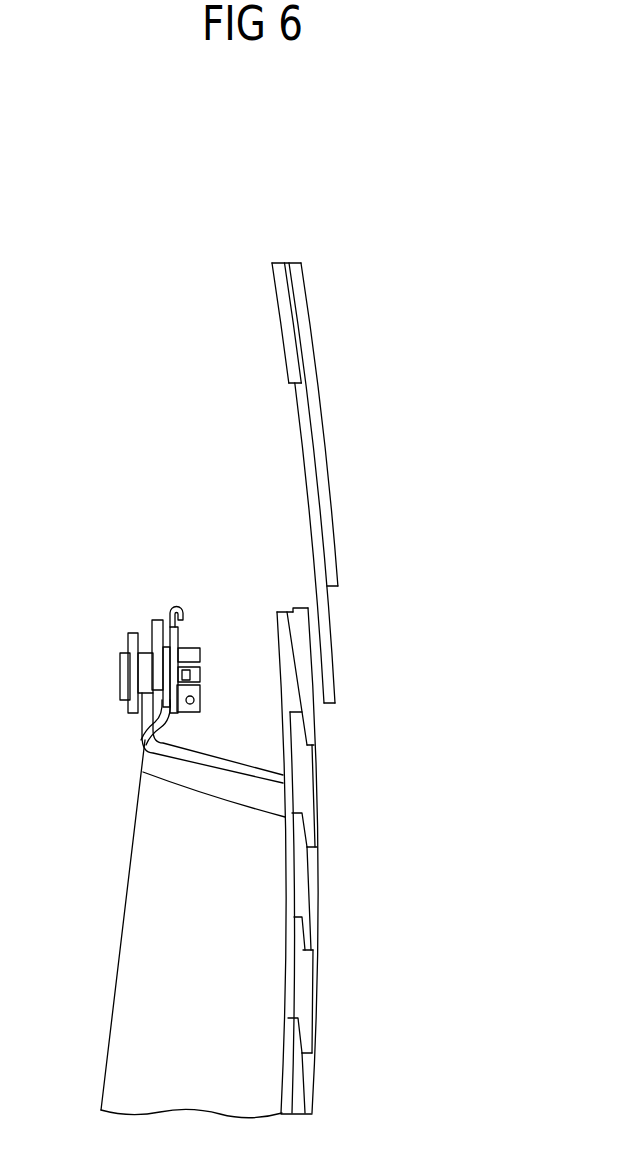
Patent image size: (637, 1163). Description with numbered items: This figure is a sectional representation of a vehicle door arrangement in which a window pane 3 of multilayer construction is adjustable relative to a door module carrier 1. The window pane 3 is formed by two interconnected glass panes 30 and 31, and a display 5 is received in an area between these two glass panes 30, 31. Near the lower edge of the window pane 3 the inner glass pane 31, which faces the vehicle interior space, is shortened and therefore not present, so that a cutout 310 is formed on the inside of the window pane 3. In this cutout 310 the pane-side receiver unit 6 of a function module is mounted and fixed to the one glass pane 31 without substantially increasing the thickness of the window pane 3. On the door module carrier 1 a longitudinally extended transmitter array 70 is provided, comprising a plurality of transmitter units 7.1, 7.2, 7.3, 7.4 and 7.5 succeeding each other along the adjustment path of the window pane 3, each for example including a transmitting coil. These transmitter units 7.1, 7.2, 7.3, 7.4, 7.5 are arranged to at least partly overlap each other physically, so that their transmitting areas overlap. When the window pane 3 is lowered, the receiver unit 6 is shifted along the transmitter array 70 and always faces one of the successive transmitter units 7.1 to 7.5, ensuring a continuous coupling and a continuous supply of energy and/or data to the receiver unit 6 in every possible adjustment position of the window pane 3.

The door module carrier 1 is at (127, 1007).
The window pane 3 is at (292, 436).
The glass pane 30 is at (320, 408).
The inner glass pane 31 is at (229, 323).
The cutout 310 is at (296, 372).
The display 5 is at (296, 259).
The pane-side receiver unit 6 is at (303, 457).
The transmitter array 70 is at (387, 864).
The transmitter unit 7.1 is at (305, 718).
The transmitter unit 7.2 is at (303, 788).
The transmitter unit 7.3 is at (308, 872).
The transmitter unit 7.4 is at (303, 997).
The transmitter unit 7.5 is at (300, 1080).